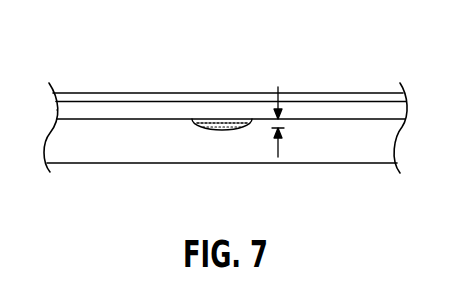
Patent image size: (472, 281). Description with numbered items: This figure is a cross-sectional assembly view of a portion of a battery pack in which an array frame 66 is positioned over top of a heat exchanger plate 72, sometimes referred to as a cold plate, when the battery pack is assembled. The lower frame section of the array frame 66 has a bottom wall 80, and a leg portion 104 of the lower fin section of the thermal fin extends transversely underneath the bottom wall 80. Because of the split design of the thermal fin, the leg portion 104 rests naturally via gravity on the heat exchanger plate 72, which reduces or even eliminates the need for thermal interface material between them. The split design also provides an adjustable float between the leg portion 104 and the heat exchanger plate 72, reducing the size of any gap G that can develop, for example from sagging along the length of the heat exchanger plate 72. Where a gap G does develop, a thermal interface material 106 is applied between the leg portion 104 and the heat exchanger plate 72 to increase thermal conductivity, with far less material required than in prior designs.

The array frame 66 is at (131, 85).
The bottom wall 80 is at (175, 98).
The leg portion 104 is at (88, 112).
The thermal interface material 106 is at (213, 124).
The heat exchanger plate 72 is at (338, 145).
The gap G is at (281, 152).